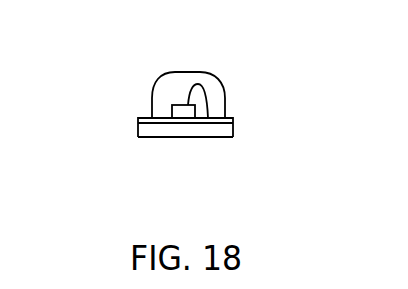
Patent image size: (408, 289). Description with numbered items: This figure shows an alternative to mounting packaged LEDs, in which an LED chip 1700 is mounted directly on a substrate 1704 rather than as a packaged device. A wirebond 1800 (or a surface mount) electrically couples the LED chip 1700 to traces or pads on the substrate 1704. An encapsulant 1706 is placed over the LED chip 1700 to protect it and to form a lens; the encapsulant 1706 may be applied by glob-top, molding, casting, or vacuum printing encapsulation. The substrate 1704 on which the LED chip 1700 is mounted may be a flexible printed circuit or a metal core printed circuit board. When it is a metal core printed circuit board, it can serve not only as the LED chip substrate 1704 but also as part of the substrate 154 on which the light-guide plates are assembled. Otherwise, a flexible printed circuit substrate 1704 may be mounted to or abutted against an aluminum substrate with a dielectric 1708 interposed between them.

The LED chip 1700 is at (177, 105).
The wirebond 1800 is at (197, 84).
The encapsulant 1706 is at (218, 90).
The substrate 1704 is at (147, 117).
The dielectric 1708 is at (138, 122).
The substrate 154 is at (192, 137).